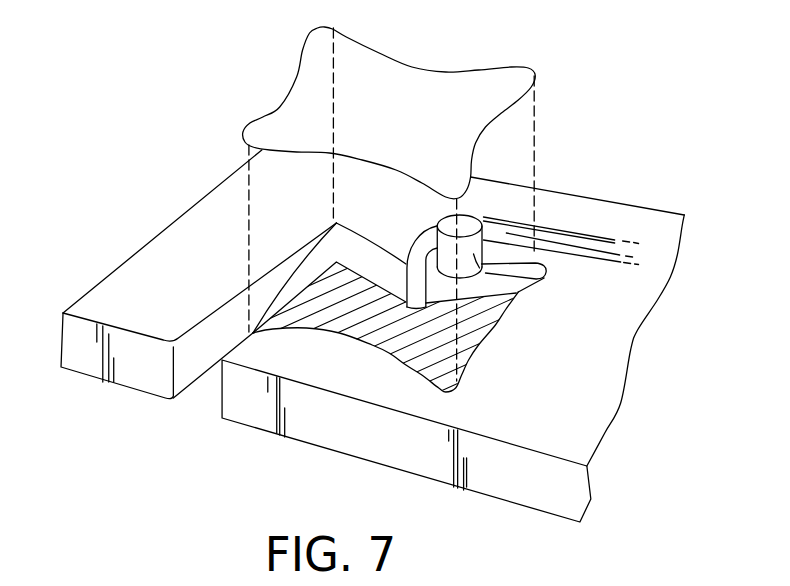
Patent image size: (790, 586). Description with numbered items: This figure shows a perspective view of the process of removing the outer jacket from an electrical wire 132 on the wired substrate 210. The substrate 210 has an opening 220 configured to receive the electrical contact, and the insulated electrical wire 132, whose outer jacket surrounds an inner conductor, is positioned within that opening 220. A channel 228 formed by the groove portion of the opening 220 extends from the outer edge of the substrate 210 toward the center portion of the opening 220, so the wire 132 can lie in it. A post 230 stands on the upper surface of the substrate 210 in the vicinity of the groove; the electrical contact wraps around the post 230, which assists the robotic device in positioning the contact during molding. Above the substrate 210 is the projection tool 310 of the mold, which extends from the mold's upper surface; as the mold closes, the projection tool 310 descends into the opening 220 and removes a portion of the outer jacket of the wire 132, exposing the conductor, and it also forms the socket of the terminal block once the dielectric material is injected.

The projection tool 310 is at (447, 84).
The substrate 210 is at (628, 230).
The opening 220 is at (491, 304).
The post 230 is at (541, 281).
The electrical wire 132 is at (560, 237).
The channel 228 is at (187, 415).